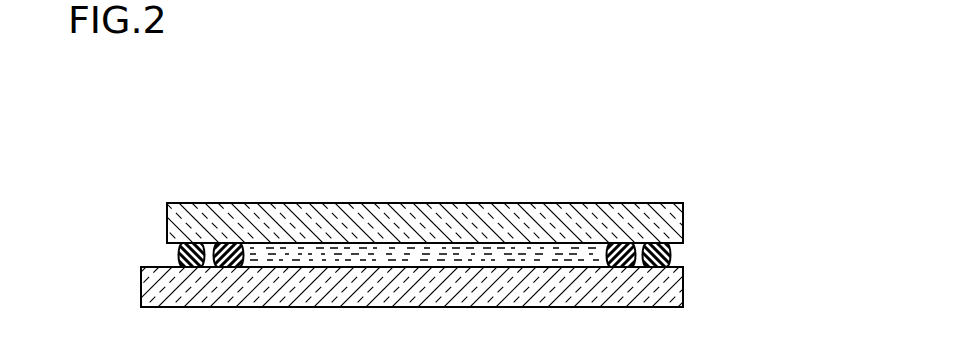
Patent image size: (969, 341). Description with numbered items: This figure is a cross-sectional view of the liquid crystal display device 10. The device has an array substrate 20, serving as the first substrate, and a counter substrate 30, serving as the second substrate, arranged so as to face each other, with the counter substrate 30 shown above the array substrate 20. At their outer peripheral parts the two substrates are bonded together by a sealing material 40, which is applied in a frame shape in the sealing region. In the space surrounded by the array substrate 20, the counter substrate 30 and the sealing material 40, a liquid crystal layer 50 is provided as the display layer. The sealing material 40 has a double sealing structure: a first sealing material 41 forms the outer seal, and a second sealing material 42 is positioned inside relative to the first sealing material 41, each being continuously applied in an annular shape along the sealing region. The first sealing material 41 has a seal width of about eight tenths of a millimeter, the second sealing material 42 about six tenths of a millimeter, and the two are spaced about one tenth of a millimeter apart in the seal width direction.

The liquid crystal display device 10 is at (154, 133).
The array substrate 20 is at (683, 283).
The counter substrate 30 is at (683, 218).
The sealing material 40 is at (167, 147).
The first sealing material 41 is at (196, 243).
The second sealing material 42 is at (228, 243).
The liquid crystal layer 50 is at (277, 250).